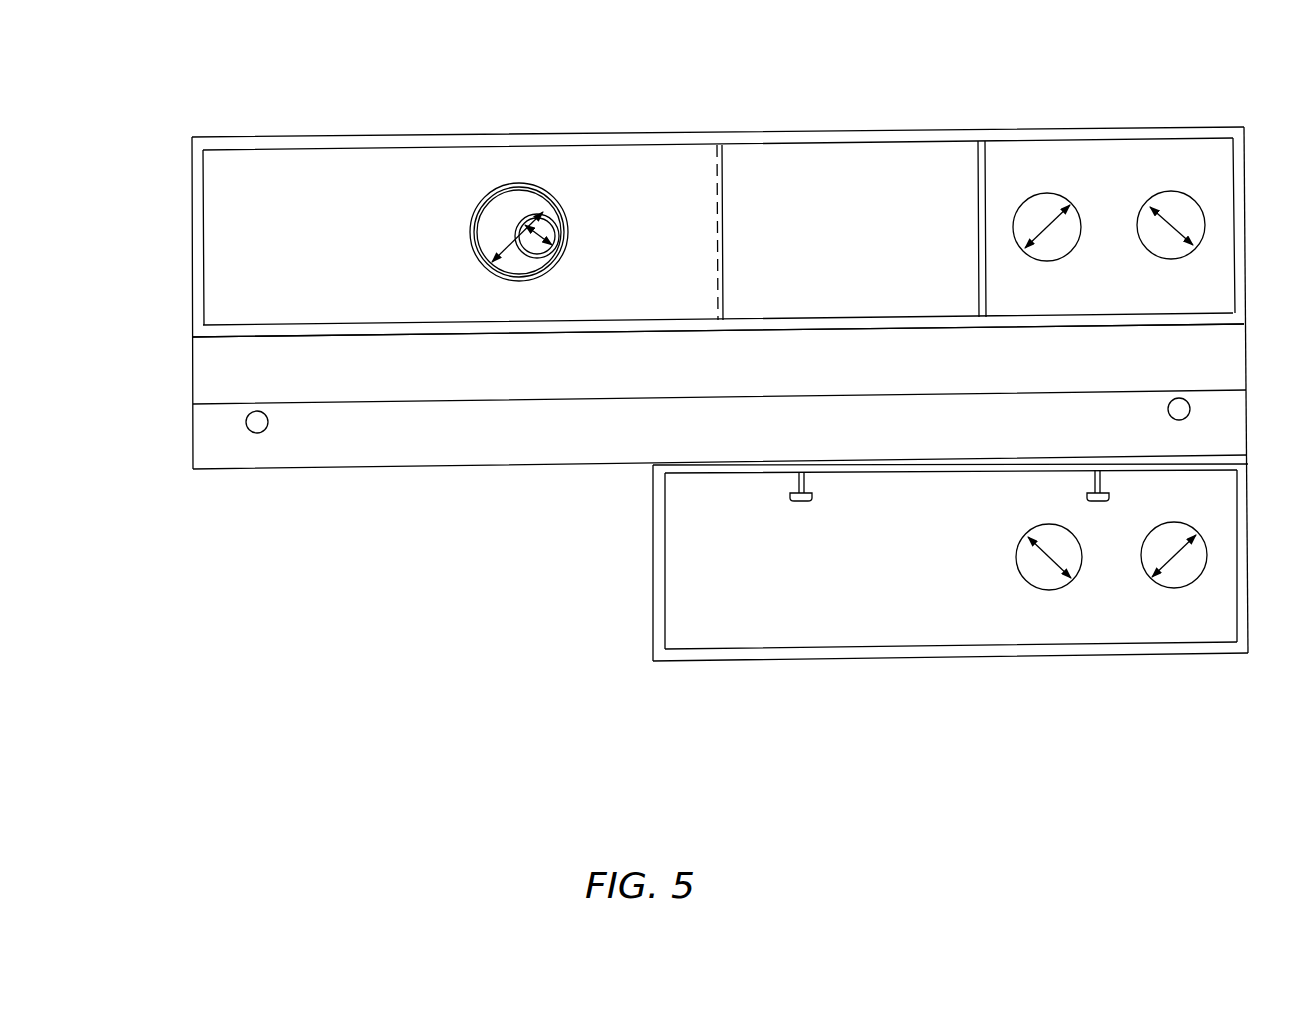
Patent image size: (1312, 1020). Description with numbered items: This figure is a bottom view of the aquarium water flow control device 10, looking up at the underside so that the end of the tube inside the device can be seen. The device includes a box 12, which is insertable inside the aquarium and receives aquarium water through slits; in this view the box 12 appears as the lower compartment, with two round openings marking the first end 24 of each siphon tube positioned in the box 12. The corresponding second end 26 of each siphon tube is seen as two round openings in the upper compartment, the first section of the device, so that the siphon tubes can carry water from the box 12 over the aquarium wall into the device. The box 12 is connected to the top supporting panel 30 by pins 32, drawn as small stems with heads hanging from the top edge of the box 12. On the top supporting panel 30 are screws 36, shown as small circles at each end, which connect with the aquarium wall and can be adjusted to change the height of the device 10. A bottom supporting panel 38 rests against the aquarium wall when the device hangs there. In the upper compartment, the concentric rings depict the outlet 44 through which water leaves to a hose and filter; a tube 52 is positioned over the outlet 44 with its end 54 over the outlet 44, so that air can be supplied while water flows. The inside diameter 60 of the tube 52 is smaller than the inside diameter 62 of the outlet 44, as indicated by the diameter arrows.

The aquarium water flow control device 10 is at (408, 98).
The box 12 is at (785, 690).
The first end 24 is at (1172, 588).
The second end 26 is at (1048, 260).
The top supporting panel 30 is at (1232, 390).
The pins 32 is at (802, 501).
The screws 36 is at (268, 419).
The bottom supporting panel 38 is at (1242, 338).
The outlet 44 is at (563, 190).
The tube 52 is at (533, 244).
The end 54 is at (564, 238).
The inside diameter 60 is at (534, 250).
The inside diameter 62 is at (503, 242).